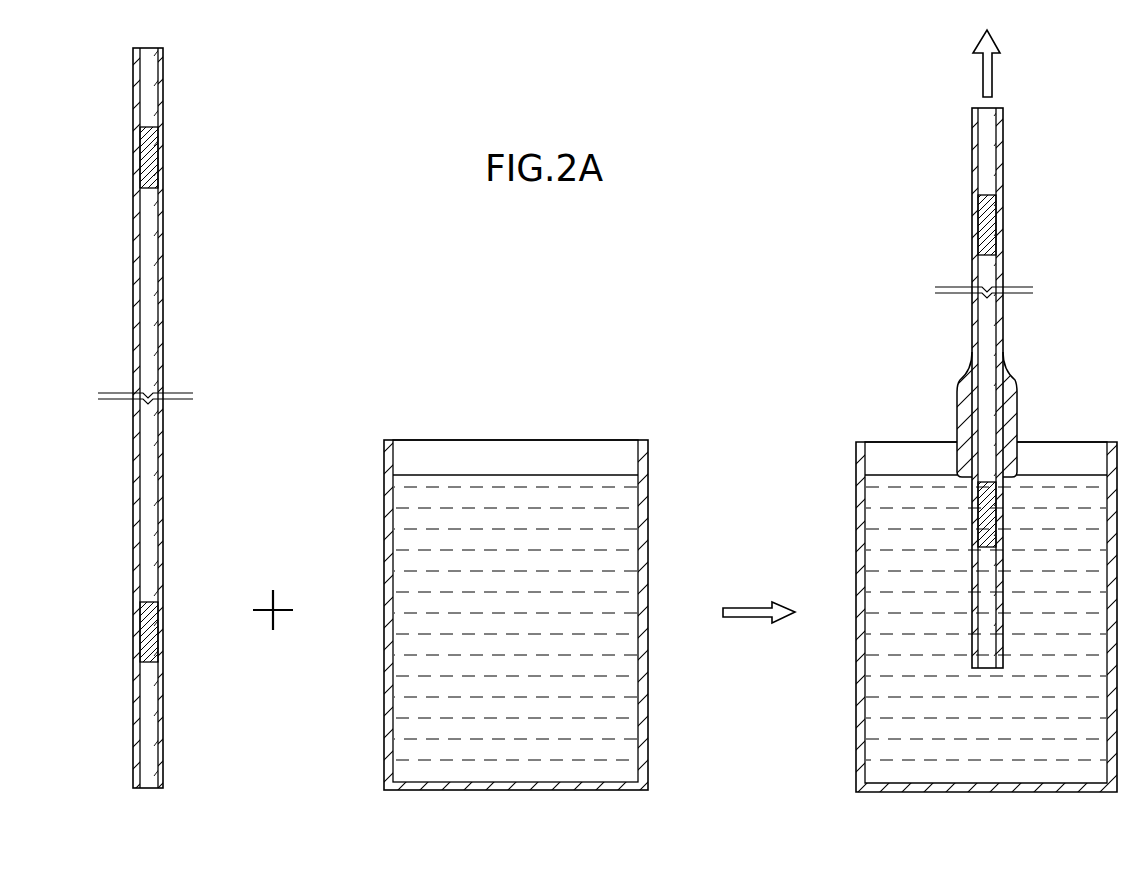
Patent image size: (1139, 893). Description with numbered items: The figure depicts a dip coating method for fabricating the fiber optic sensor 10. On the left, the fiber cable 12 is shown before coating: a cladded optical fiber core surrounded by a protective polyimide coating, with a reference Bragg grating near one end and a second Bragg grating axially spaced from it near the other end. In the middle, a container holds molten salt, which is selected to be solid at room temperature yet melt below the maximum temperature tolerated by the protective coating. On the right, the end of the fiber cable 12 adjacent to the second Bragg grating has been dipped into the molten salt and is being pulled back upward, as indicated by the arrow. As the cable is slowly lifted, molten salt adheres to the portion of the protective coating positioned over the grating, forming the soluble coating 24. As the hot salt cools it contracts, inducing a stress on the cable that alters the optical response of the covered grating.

The fiber optic sensor 10 is at (955, 411).
The fiber optic cable 12 is at (168, 436).
The soluble coating 24 is at (1017, 417).